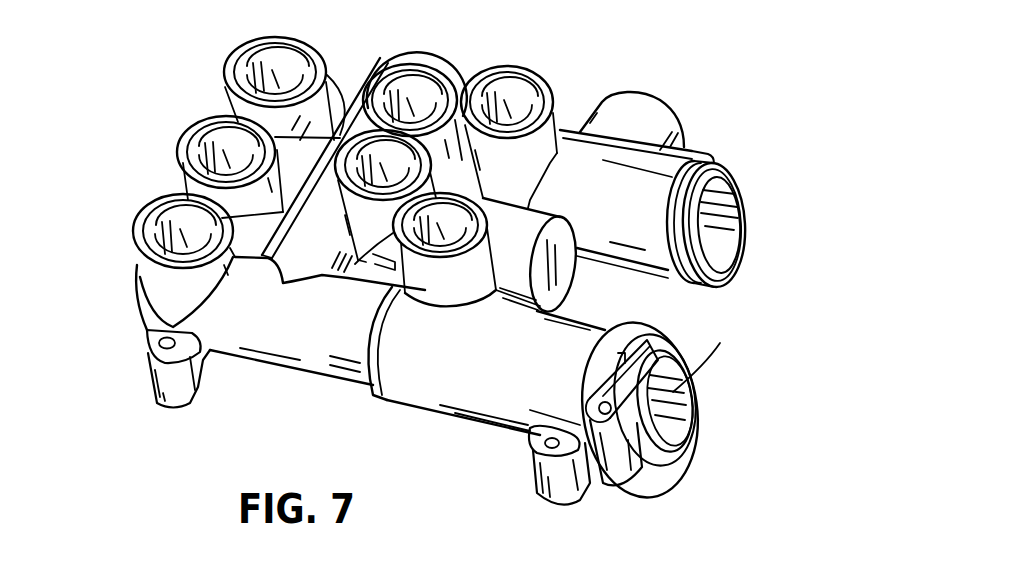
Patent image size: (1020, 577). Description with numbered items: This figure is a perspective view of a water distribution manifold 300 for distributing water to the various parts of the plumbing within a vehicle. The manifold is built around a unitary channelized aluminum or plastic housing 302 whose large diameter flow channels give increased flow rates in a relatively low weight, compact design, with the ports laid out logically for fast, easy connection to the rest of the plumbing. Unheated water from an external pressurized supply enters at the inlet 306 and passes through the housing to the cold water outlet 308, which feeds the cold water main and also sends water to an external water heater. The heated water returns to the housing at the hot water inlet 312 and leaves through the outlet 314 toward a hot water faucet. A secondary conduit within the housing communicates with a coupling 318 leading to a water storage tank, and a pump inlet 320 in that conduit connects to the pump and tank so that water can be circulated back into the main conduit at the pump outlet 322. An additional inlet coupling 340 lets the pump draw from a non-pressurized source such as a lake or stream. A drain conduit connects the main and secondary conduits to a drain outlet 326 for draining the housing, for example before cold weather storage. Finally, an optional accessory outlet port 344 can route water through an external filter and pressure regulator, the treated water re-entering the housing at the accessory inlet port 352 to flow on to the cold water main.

The water distribution manifold 300 is at (461, 271).
The housing 302 is at (400, 407).
The inlet 306 is at (737, 200).
The cold water outlet 308 is at (522, 82).
The hot water inlet 312 is at (352, 97).
The outlet 314 is at (352, 282).
The coupling 318 is at (152, 215).
The pump inlet 320 is at (208, 128).
The pump outlet 322 is at (397, 55).
The drain outlet 326 is at (622, 500).
The inlet coupling 340 is at (248, 53).
The accessory outlet port 344 is at (603, 103).
The accessory inlet port 352 is at (427, 53).